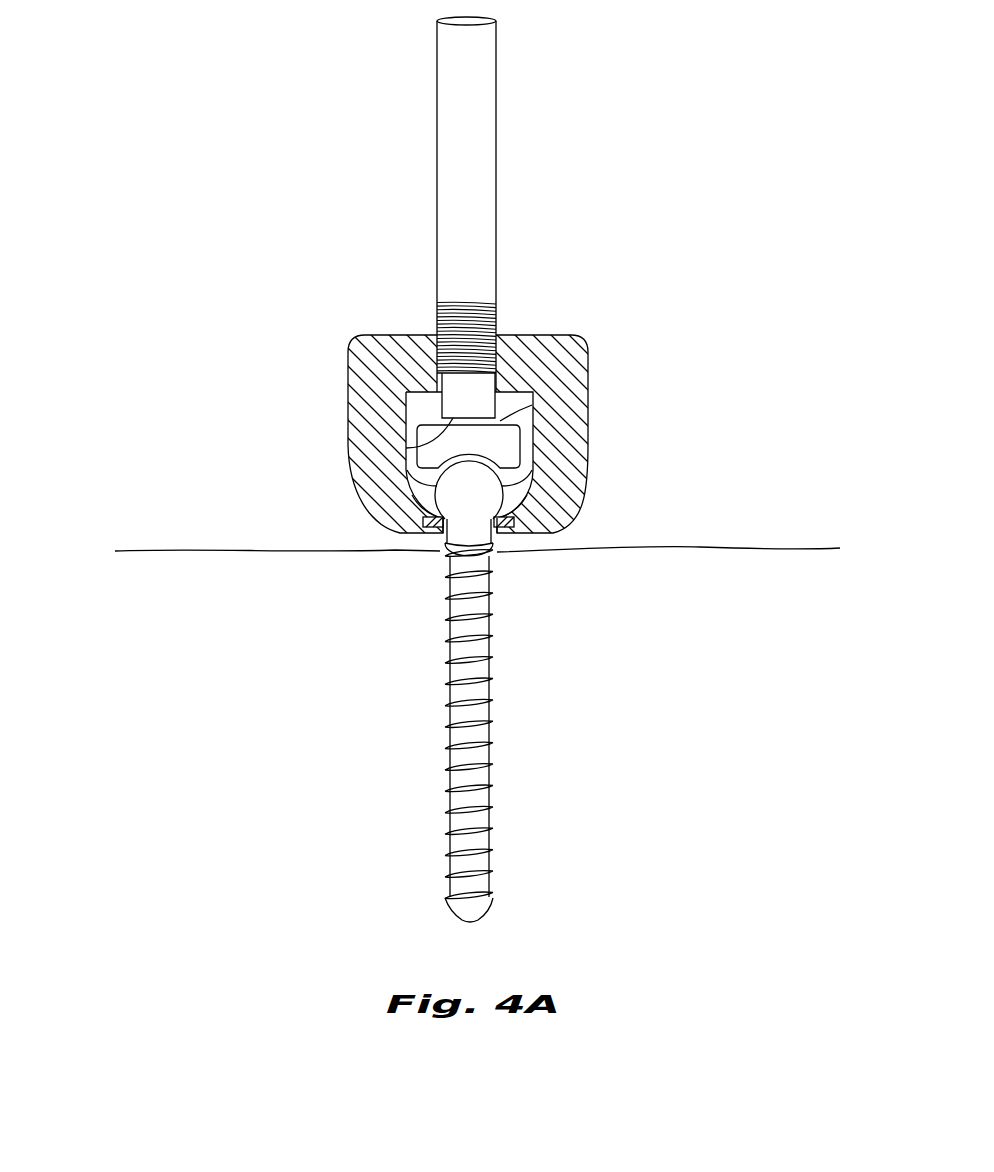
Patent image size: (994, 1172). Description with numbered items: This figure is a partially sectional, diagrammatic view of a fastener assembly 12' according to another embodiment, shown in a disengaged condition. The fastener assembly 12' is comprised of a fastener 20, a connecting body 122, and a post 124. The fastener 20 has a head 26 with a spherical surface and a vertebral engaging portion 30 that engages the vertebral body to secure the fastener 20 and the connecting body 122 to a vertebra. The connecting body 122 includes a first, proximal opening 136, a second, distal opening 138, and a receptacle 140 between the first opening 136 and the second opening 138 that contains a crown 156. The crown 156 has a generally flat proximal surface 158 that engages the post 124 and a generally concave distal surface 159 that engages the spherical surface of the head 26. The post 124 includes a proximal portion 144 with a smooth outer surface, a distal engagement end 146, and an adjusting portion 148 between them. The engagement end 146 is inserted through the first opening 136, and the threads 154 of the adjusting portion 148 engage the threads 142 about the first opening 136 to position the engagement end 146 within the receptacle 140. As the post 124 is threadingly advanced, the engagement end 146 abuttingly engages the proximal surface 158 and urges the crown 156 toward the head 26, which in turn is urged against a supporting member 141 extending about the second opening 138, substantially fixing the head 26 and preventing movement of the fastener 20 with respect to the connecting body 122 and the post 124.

The fastener assembly 12' is at (416, 384).
The fastener 20 is at (548, 768).
The head 26 is at (470, 505).
The vertebral engaging portion 30 is at (505, 668).
The connecting body 122 is at (598, 408).
The post 124 is at (504, 182).
The first, proximal opening 136 is at (432, 352).
The second, distal opening 138 is at (440, 532).
The receptacle 140 is at (417, 405).
The supporting member 141 is at (540, 512).
The threads 142 is at (505, 366).
The proximal portion 144 is at (503, 70).
The distal engagement end 146 is at (415, 450).
The adjusting portion 148 is at (505, 299).
The threads 154 is at (498, 325).
The crown 156 is at (540, 450).
The proximal surface 158 is at (538, 413).
The distal surface 159 is at (420, 497).